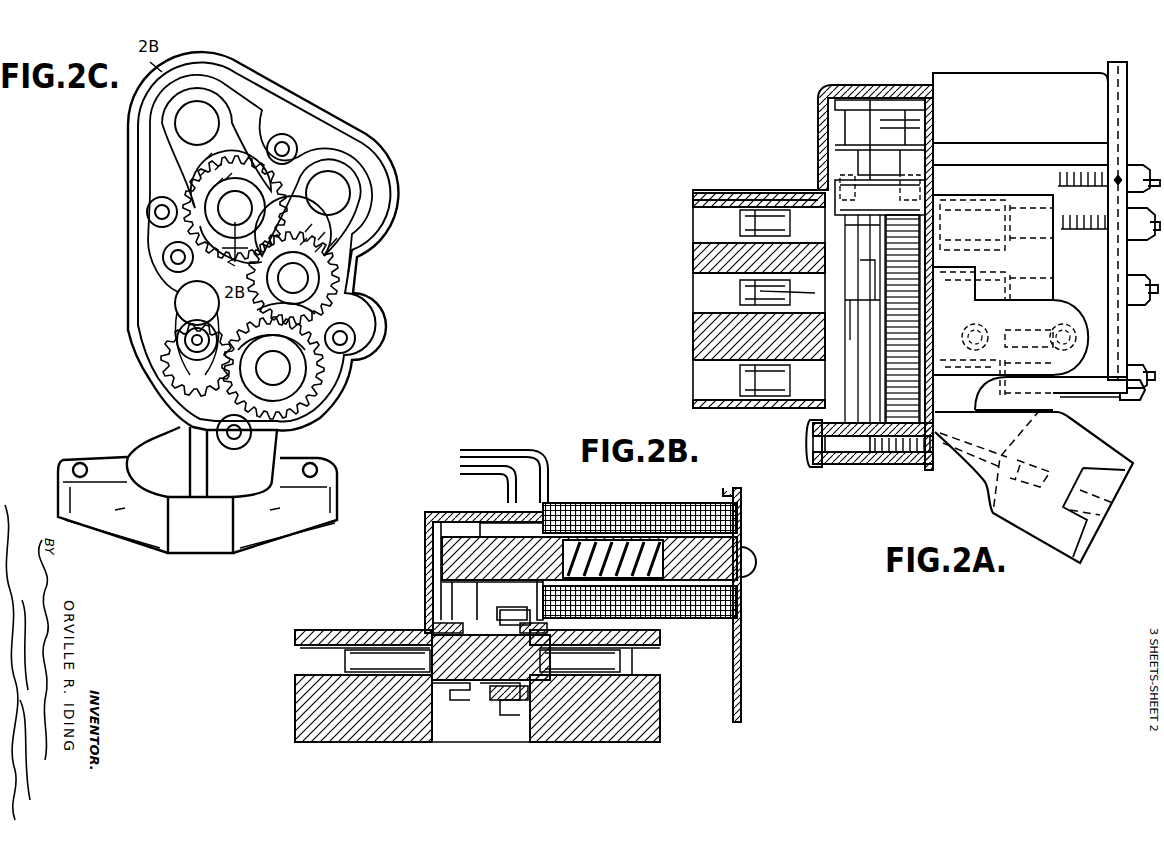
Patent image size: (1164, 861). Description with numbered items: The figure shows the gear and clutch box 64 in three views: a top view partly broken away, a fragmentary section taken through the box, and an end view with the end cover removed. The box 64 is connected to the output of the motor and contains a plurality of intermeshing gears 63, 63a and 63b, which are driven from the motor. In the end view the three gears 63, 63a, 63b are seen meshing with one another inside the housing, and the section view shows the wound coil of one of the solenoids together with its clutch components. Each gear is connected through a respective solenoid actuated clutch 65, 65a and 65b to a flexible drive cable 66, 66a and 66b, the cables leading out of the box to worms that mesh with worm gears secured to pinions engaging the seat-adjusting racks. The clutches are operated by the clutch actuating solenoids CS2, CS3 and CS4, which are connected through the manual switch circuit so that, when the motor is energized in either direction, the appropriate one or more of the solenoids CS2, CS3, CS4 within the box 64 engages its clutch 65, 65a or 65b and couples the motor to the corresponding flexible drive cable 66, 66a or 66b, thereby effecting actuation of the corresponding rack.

In FIG. 2C, the intermeshing gear 63 is at (231, 255).
In FIG. 2B, the intermeshing gear 63 is at (520, 705).
In FIG. 2A, the intermeshing gear 63 is at (920, 238).
In FIG. 2C, the intermeshing gear 63a is at (325, 303).
In FIG. 2A, the intermeshing gear 63a is at (1010, 347).
In FIG. 2C, the intermeshing gear 63b is at (310, 398).
In FIG. 2A, the intermeshing gear 63b is at (1034, 486).
In FIG. 2C, the gear and clutch box 64 is at (120, 272).
In FIG. 2B, the gear and clutch box 64 is at (690, 498).
In FIG. 2A, the gear and clutch box 64 is at (1017, 69).
In FIG. 2C, the solenoid actuated clutch 65 is at (225, 200).
In FIG. 2B, the solenoid actuated clutch 65 is at (470, 700).
In FIG. 2A, the solenoid actuated clutch 65 is at (842, 168).
In FIG. 2C, the solenoid actuated clutch 65a is at (320, 278).
In FIG. 2C, the solenoid actuated clutch 65b is at (296, 376).
In FIG. 2A, the solenoid actuated clutch 65b is at (848, 478).
In FIG. 2A, the flexible drive cable 66 is at (1109, 202).
In FIG. 2A, the flexible drive cable 66a is at (1135, 278).
In FIG. 2A, the flexible drive cable 66b is at (1122, 395).
In FIG. 2C, the clutch actuating solenoid CS2 is at (138, 318).
In FIG. 2C, the clutch actuating solenoid CS3 is at (390, 182).
In FIG. 2C, the clutch actuating solenoid CS4 is at (150, 112).
In FIG. 2B, the clutch actuating solenoid CS4 is at (588, 498).